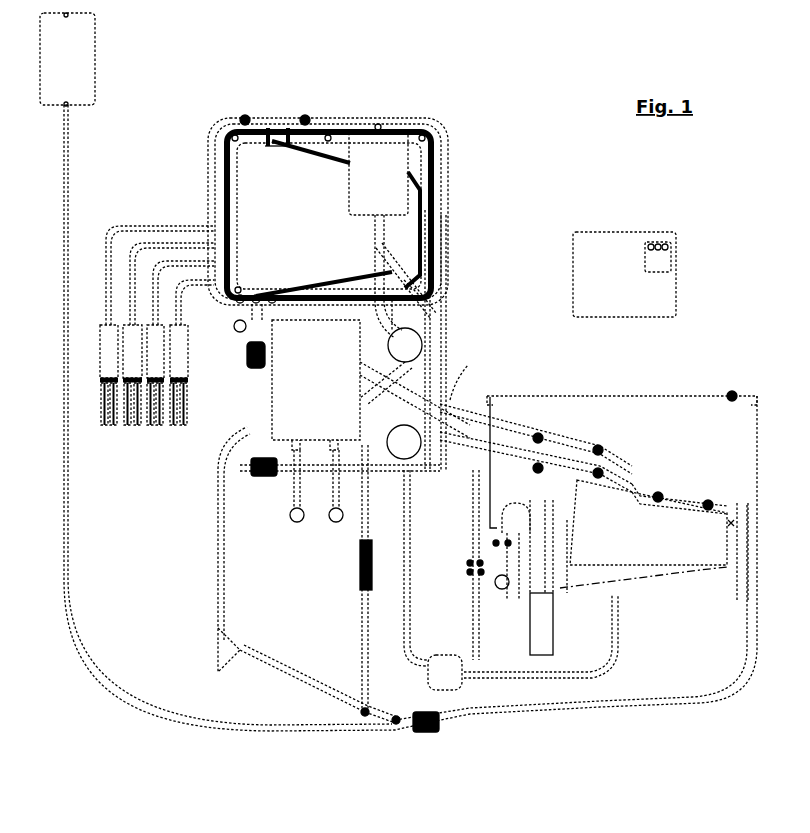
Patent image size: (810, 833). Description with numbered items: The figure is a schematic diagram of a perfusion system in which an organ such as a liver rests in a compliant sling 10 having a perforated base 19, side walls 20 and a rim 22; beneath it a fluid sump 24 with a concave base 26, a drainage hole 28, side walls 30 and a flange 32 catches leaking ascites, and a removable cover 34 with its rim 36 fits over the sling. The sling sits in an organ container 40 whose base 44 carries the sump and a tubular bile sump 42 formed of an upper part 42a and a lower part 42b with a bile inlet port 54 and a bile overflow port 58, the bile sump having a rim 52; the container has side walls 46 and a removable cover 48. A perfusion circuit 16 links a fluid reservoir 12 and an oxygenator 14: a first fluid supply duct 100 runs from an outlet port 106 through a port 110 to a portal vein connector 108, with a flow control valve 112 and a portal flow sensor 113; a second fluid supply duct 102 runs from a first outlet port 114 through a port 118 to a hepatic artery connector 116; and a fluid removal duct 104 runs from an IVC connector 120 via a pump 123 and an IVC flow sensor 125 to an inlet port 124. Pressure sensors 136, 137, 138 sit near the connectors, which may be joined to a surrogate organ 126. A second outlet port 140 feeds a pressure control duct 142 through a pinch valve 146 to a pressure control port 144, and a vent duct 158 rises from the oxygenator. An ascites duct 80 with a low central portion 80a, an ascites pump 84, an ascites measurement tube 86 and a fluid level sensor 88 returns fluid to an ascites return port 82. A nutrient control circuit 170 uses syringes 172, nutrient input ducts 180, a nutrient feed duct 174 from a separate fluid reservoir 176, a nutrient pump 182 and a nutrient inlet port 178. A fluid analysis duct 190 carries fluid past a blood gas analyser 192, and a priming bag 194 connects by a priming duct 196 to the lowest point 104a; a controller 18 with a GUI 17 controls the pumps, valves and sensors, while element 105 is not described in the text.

The sling 10 is at (698, 573).
The fluid reservoir 12 is at (434, 238).
The oxygenator 14 is at (270, 393).
The perfusion circuit 16 is at (216, 545).
The GUI 17 is at (660, 262).
The controller 18 is at (589, 235).
The perforated base 19 is at (645, 563).
The side walls 20 is at (735, 542).
The rim 22 is at (735, 527).
The fluid sump 24 is at (624, 586).
The concave base 26 is at (672, 577).
The drainage hole 28 is at (612, 592).
The side walls 30 is at (703, 573).
The flange 32 is at (735, 532).
The removable cover 34 is at (638, 498).
The rim 36 is at (731, 520).
The organ container 40 is at (762, 440).
The bile sump 42 is at (554, 607).
The upper part 42a is at (557, 583).
The lower part 42b is at (556, 640).
The base 44 is at (486, 528).
The side walls 46 is at (492, 493).
The removable cover 48 is at (677, 396).
The rim 52 is at (522, 525).
The bile inlet port 54 is at (528, 617).
The bile overflow port 58 is at (540, 592).
The ascites duct 80 is at (540, 673).
The central portion 80a is at (465, 673).
The ascites return port 82 is at (281, 128).
The ascites pump 84 is at (452, 690).
The ascites measurement tube 86 is at (473, 600).
The fluid level sensor 88 is at (468, 569).
The first fluid supply duct 100 is at (282, 416).
The second fluid supply duct 102 is at (460, 400).
The fluid removal duct 104 is at (620, 708).
The lowest point 104a is at (405, 728).
The junction 105 is at (397, 716).
The outlet port 106 is at (258, 292).
The portal vein connector 108 is at (567, 470).
The port 110 is at (488, 465).
The flow control valve 112 is at (400, 450).
The portal flow sensor 113 is at (250, 366).
The first outlet port 114 is at (365, 366).
The hepatic artery connector 116 is at (570, 440).
The port 118 is at (495, 400).
The IVC connector 120 is at (685, 495).
The pump 123 is at (220, 643).
The inlet port 124 is at (267, 433).
The IVC flow sensor 125 is at (427, 733).
The surrogate organ 126 is at (626, 462).
The pressure sensor 136 is at (477, 453).
The pressure sensor 137 is at (480, 400).
The pressure sensor 138 is at (735, 524).
The second outlet port 140 is at (365, 391).
The pressure control duct 142 is at (402, 318).
The pressure control port 144 is at (410, 270).
The pinch valve 146 is at (388, 345).
The vent duct 158 is at (395, 302).
The nutrient control circuit 170 is at (212, 195).
The syringes 172 is at (100, 358).
The nutrient feed duct 174 is at (215, 148).
The separate fluid reservoir 176 is at (389, 140).
The nutrient inlet port 178 is at (277, 128).
The nutrient input duct 180 is at (125, 224).
The nutrient pump 182 is at (250, 480).
The fluid analysis duct 190 is at (365, 620).
The blood gas analyser 192 is at (358, 562).
The priming bag 194 is at (96, 55).
The priming duct 196 is at (68, 165).